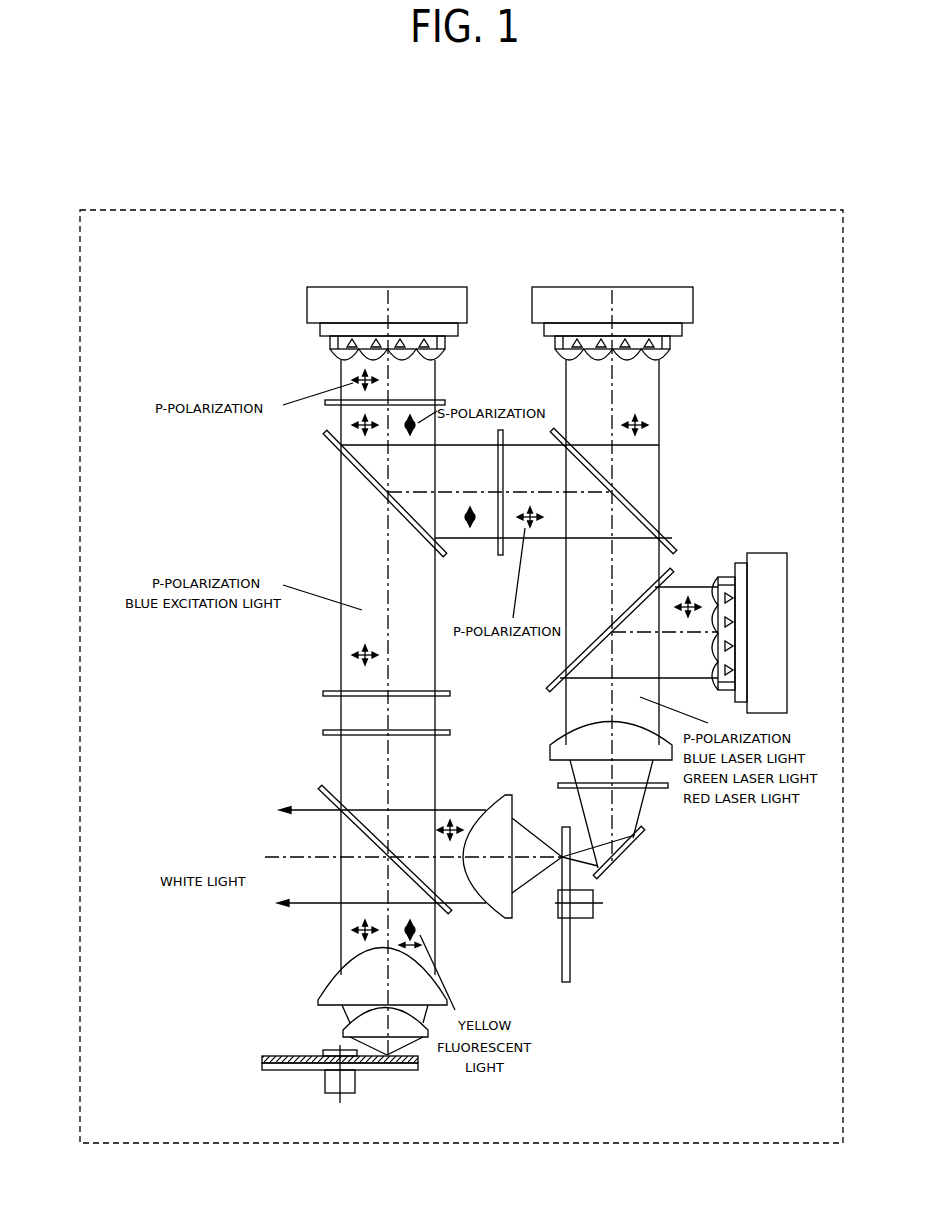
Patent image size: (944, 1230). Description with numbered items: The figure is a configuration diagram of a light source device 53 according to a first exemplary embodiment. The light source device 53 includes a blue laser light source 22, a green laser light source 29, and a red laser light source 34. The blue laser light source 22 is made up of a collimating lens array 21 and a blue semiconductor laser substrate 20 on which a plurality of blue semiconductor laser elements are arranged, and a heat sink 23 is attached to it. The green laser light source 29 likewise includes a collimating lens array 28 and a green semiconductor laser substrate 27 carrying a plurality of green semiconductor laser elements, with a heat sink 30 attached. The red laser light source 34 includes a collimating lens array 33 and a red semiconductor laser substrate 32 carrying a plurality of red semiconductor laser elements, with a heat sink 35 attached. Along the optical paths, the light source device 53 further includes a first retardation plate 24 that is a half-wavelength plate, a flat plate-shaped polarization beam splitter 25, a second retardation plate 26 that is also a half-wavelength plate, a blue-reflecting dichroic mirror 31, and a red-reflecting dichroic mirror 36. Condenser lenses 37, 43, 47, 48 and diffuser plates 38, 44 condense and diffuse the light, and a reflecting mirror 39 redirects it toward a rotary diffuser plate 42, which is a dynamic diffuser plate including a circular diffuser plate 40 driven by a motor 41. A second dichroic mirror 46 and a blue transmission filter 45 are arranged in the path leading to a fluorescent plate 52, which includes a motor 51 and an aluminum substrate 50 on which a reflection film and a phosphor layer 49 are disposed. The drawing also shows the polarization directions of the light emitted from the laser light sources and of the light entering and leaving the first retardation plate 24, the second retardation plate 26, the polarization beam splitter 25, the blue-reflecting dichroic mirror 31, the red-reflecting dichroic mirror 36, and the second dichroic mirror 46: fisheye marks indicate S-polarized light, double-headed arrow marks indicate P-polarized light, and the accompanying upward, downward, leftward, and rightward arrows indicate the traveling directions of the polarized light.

The blue semiconductor laser substrate 20 is at (320, 331).
The collimating lens array 21 is at (332, 349).
The blue laser light source 22 is at (321, 346).
The heat sink 23 is at (307, 297).
The first retardation plate 24 is at (448, 402).
The polarization beam splitter 25 is at (325, 440).
The second retardation plate 26 is at (497, 557).
The green semiconductor laser substrate 27 is at (682, 330).
The collimating lens array 28 is at (672, 348).
The green laser light source 29 is at (683, 340).
The heat sink 30 is at (693, 305).
The blue-reflecting dichroic mirror 31 is at (553, 430).
The red semiconductor laser substrate 32 is at (738, 563).
The collimating lens array 33 is at (723, 577).
The red laser light source 34 is at (722, 570).
The heat sink 35 is at (787, 598).
The red-reflecting dichroic mirror 36 is at (548, 690).
The condenser lens 37 is at (550, 745).
The diffuser plate 38 is at (560, 785).
The reflecting mirror 39 is at (632, 845).
The circular diffuser plate 40 is at (573, 960).
The motor 41 is at (595, 915).
The rotary diffuser plate 42 is at (653, 913).
The condenser lens 43 is at (512, 920).
The diffuser plate 44 is at (323, 693).
The blue transmission filter 45 is at (323, 732).
The second dichroic mirror 46 is at (320, 787).
The condenser lens 47 is at (320, 997).
The condenser lens 48 is at (345, 1033).
The phosphor layer 49 is at (262, 1056).
The aluminum substrate 50 is at (262, 1068).
The motor 51 is at (322, 1082).
The fluorescent plate 52 is at (276, 1075).
The light source device 53 is at (797, 210).